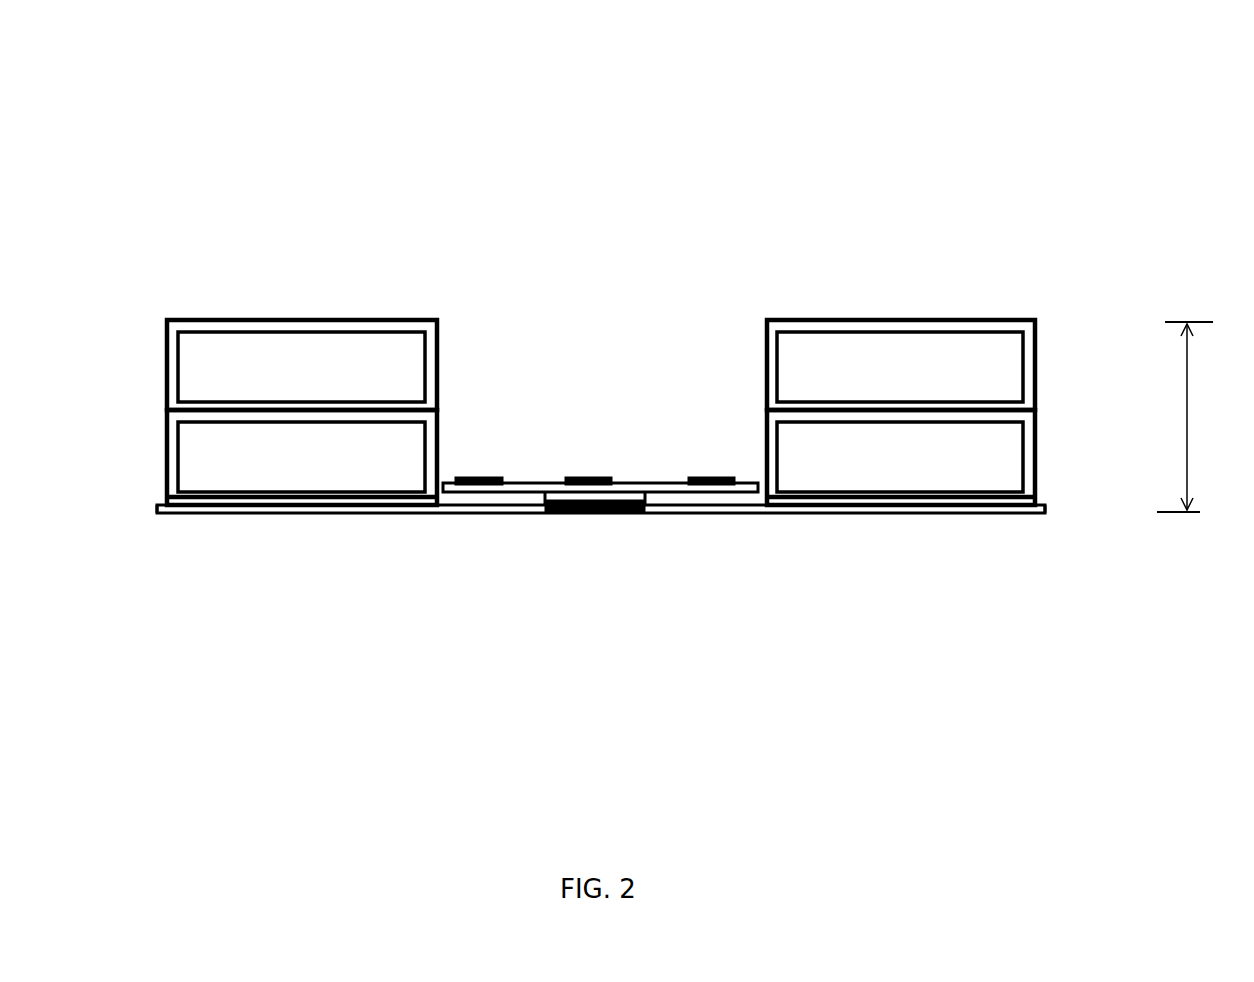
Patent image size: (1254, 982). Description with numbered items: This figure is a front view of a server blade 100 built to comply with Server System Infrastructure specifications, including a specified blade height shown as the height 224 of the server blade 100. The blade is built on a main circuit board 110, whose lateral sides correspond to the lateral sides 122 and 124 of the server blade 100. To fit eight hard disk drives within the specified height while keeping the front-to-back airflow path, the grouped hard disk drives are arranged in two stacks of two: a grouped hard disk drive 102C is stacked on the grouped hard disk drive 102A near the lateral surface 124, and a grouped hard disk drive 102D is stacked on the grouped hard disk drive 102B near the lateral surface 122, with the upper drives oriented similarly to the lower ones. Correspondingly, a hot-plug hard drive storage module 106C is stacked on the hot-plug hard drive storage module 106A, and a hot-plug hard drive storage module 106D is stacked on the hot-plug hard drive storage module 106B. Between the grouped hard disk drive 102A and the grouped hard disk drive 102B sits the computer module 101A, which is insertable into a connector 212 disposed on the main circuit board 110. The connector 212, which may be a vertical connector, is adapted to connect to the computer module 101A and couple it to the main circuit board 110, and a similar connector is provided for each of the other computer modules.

The server blade 100 is at (594, 70).
The computer module 101A is at (540, 483).
The grouped hard disk drive 102A is at (167, 455).
The grouped hard disk drive 102B is at (1037, 448).
The grouped hard disk drive 102C is at (170, 360).
The grouped hard disk drive 102D is at (1037, 372).
The hot-plug hard drive storage module 106A is at (167, 483).
The hot-plug hard drive storage module 106B is at (1037, 470).
The hot-plug hard drive storage module 106C is at (170, 320).
The hot-plug hard drive storage module 106D is at (1037, 343).
The main circuit board 110 is at (770, 515).
The lateral side 122 is at (1047, 513).
The lateral side 124 is at (157, 507).
The connector 212 is at (548, 500).
The height 224 is at (1199, 417).